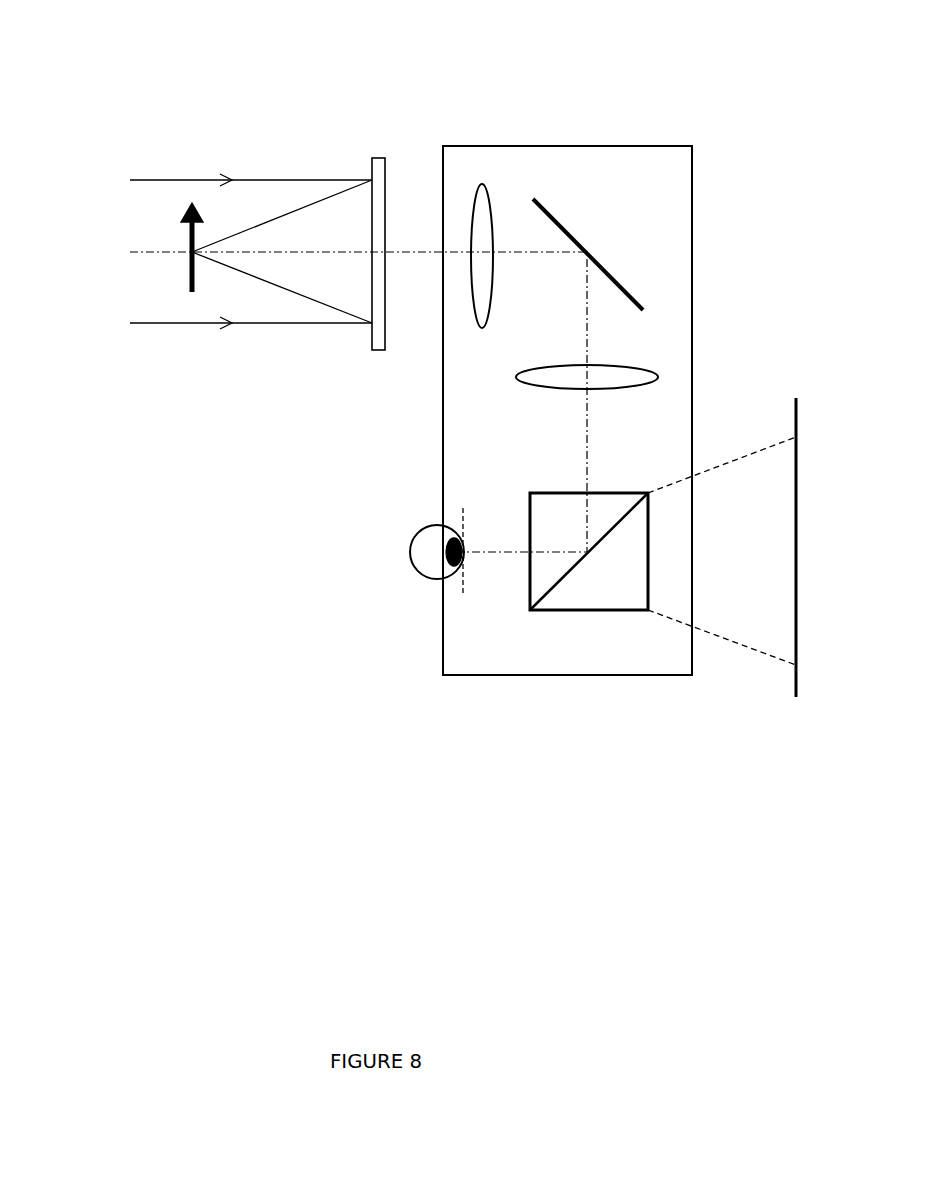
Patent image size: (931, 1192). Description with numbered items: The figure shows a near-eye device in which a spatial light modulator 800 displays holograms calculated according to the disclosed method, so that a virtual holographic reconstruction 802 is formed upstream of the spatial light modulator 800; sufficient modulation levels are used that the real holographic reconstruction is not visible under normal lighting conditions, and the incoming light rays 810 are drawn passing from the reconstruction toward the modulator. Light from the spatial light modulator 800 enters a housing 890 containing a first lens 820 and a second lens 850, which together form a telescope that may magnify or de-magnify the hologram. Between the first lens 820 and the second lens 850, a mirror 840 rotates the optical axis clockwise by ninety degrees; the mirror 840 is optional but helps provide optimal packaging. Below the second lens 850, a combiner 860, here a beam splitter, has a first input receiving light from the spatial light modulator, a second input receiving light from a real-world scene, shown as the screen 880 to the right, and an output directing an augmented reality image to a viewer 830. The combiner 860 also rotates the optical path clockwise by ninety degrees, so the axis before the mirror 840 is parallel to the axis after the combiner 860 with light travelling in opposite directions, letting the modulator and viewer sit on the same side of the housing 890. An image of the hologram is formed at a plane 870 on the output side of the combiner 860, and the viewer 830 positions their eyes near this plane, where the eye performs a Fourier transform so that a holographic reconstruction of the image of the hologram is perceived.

The spatial light modulator 800 is at (380, 158).
The virtual holographic reconstruction 802 is at (190, 272).
The light rays 810 is at (268, 323).
The first lens 820 is at (482, 185).
The viewer 830 is at (413, 572).
The mirror 840 is at (557, 220).
The second lens 850 is at (658, 377).
The combiner 860 is at (608, 610).
The plane 870 is at (463, 603).
The screen 880 is at (796, 705).
The housing 890 is at (692, 196).